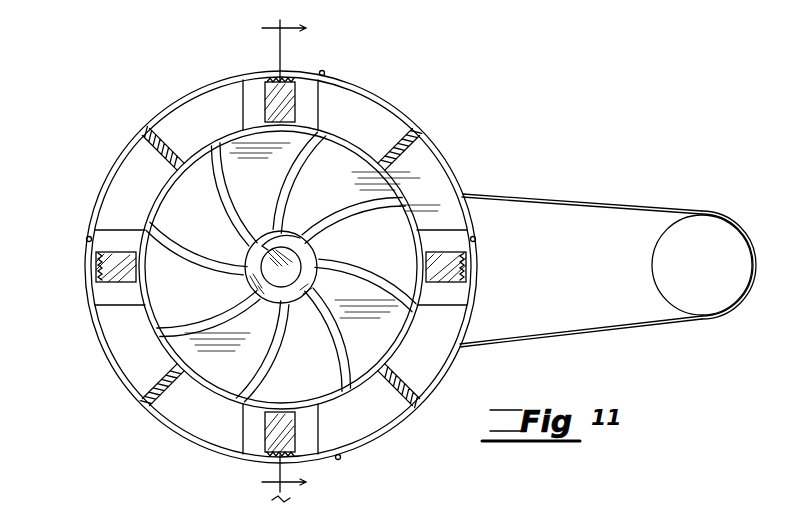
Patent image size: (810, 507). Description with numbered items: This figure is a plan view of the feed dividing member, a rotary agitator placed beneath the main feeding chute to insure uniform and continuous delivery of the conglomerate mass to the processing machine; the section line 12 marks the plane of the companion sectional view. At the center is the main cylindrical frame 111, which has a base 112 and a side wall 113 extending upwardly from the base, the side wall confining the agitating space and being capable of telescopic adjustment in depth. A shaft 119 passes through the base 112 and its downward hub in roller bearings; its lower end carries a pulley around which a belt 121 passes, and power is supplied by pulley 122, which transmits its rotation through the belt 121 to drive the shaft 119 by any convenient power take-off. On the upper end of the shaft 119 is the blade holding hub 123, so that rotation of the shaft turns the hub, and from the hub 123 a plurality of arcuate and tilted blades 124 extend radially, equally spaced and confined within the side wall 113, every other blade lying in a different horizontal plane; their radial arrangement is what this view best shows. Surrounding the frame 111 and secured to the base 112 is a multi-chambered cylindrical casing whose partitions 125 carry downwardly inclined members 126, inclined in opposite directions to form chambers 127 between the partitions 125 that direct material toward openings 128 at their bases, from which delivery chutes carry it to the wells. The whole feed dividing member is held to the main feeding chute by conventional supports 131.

The section line 12 is at (279, 257).
The main cylindrical frame 111 is at (346, 146).
The base 112 is at (394, 184).
The side wall 113 is at (405, 196).
The shaft 119 is at (298, 232).
The belt 121 is at (572, 199).
The pulley 122 is at (654, 287).
The blade holding hub 123 is at (319, 245).
The arcuate and tilted blades 124 is at (280, 176).
The partitions 125 is at (153, 125).
The downwardly inclined members 126 is at (196, 95).
The chambers 127 is at (324, 72).
The openings 128 is at (297, 78).
The supports 131 is at (97, 263).